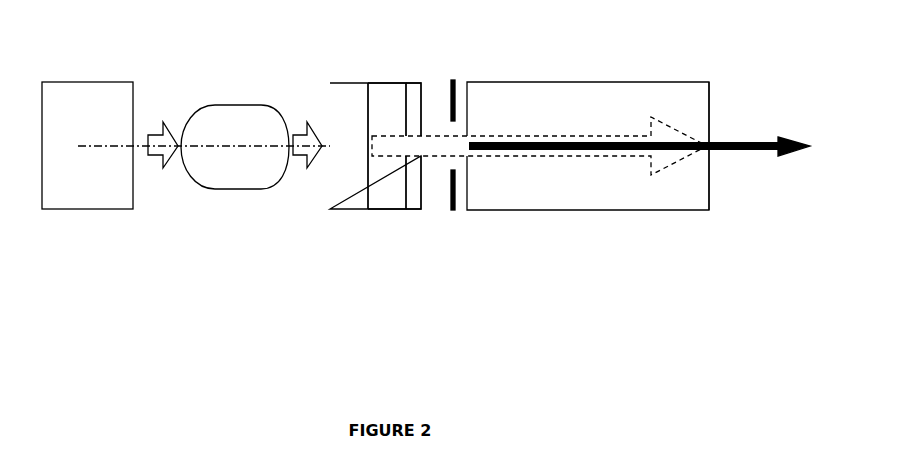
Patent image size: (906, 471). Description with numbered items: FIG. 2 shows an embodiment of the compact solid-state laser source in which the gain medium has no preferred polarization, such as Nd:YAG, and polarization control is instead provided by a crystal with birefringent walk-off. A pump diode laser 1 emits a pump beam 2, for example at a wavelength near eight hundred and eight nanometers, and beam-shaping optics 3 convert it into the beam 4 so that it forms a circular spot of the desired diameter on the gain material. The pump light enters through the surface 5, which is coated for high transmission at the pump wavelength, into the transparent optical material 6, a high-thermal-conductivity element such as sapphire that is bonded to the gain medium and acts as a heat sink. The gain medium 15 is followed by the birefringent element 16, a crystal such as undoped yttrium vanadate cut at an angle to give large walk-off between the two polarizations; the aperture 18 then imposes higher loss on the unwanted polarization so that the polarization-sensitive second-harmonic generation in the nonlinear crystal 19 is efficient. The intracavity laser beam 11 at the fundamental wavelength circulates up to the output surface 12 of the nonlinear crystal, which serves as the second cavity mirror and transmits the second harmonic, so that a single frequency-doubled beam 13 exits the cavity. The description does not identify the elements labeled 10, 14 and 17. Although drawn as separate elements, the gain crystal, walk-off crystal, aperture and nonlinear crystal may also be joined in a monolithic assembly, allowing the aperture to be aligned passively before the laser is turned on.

The pump diode laser 1 is at (88, 96).
The pump beam 2 is at (168, 153).
The beam-shaping optics 3 is at (248, 128).
The shaped pump beam 4 is at (307, 155).
The input surface 5 is at (330, 98).
The transparent optical material 6 is at (347, 196).
The output housing 10 is at (604, 195).
The intracavity laser beam 11 is at (688, 163).
The output surface of the nonlinear crystal 12 is at (713, 102).
The output second-harmonic beam 13 is at (765, 138).
The interface coating 14 is at (365, 105).
The gain medium 15 is at (393, 95).
The birefringent element 16 is at (410, 197).
The output coupler mirror 17 is at (422, 92).
The aperture 18 is at (452, 80).
The nonlinear crystal 19 is at (469, 193).